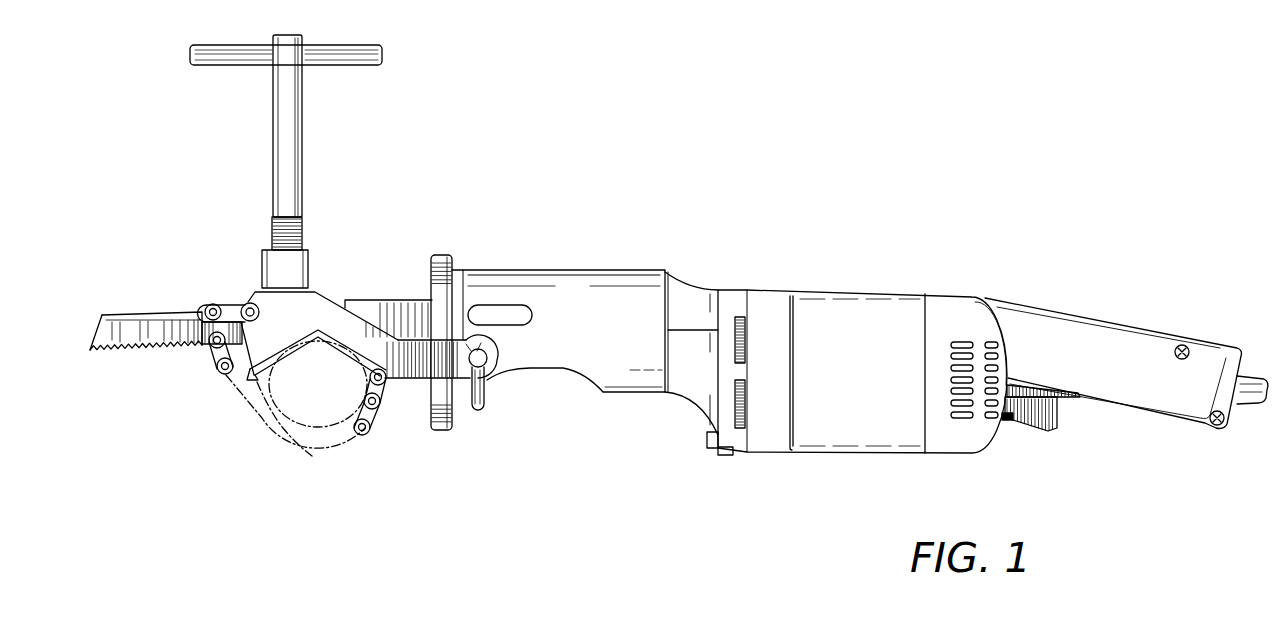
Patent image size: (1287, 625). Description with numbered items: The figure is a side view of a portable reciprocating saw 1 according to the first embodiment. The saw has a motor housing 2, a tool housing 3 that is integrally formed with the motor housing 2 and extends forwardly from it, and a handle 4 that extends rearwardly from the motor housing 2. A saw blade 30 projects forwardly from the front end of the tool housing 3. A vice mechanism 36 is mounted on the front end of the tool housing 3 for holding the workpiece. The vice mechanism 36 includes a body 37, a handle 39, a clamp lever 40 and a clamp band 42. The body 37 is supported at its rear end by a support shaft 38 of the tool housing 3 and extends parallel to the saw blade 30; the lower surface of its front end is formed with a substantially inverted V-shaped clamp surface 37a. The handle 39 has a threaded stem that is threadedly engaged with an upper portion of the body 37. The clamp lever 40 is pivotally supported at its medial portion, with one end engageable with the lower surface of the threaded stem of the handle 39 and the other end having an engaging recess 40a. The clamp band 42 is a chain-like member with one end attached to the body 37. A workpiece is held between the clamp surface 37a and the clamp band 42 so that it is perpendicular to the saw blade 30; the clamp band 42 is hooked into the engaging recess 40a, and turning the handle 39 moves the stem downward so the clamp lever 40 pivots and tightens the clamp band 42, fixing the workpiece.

The portable reciprocating saw 1 is at (758, 288).
The motor housing 2 is at (974, 443).
The tool housing 3 is at (680, 289).
The handle 4 is at (1068, 324).
The saw blade 30 is at (396, 303).
The vice mechanism 36 is at (264, 258).
The body 37 is at (320, 303).
The clamp surface 37a is at (252, 378).
The support shaft 38 is at (486, 364).
The handle 39 is at (293, 146).
The clamp lever 40 is at (227, 306).
The engaging recess 40a is at (207, 313).
The clamp band 42 is at (368, 432).